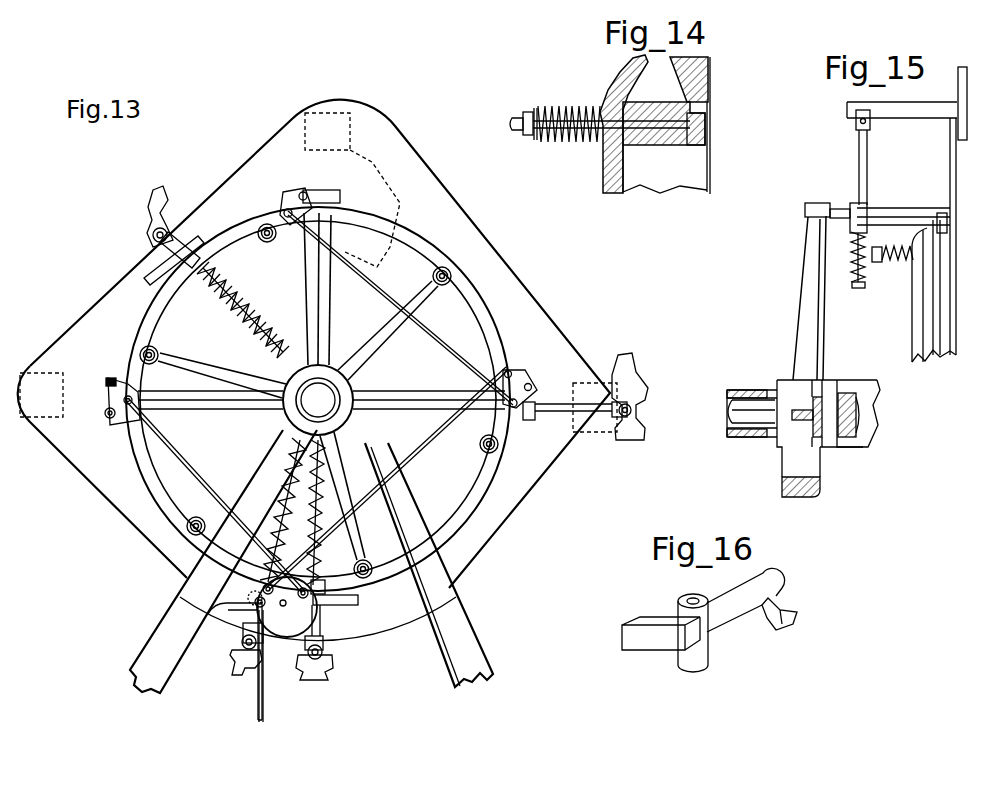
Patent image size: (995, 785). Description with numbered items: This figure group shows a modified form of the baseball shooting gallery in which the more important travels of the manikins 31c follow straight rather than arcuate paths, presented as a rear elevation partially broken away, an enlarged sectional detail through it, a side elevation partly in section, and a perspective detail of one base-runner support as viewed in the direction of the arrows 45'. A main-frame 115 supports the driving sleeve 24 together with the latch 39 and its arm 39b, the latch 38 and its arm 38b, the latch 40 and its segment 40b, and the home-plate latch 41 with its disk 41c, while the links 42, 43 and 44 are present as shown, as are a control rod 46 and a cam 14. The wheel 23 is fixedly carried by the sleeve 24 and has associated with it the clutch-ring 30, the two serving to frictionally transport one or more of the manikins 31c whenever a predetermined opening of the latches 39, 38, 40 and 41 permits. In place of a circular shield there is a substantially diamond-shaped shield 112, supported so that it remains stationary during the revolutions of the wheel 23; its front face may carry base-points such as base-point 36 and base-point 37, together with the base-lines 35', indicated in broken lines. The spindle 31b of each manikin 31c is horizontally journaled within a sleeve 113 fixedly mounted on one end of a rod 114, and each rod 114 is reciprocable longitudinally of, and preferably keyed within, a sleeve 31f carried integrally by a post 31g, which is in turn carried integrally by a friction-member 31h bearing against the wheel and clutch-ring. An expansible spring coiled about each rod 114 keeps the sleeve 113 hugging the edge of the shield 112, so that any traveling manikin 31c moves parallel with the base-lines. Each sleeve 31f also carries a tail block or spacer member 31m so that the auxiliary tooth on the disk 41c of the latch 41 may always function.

In FIG. 13, the diamond-shaped shield 112 is at (436, 224).
In FIG. 15, the diamond-shaped shield 112 is at (950, 172).
In FIG. 13, the main-frame 115 is at (448, 612).
In FIG. 15, the main-frame 115 is at (808, 320).
In FIG. 13, the wheel 23 is at (472, 293).
In FIG. 14, the wheel 23 is at (700, 80).
In FIG. 15, the wheel 23 is at (938, 303).
In FIG. 13, the clutch-ring 30 is at (482, 312).
In FIG. 14, the clutch-ring 30 is at (617, 80).
In FIG. 15, the clutch-ring 30 is at (913, 335).
In FIG. 13, the driving sleeve 24 is at (318, 400).
In FIG. 15, the driving sleeve 24 is at (775, 393).
In FIG. 13, the link 43 is at (430, 332).
In FIG. 13, the rod 114 is at (222, 300).
In FIG. 15, the rod 114 is at (867, 168).
In FIG. 13, the link 44 is at (416, 458).
In FIG. 13, the link 42 is at (200, 475).
In FIG. 13, the latch 38 is at (322, 190).
In FIG. 15, the latch 38 is at (830, 205).
In FIG. 13, the arm 38b is at (293, 190).
In FIG. 13, the latch 39 is at (110, 378).
In FIG. 13, the arm 39b is at (118, 425).
In FIG. 13, the latch 40 is at (536, 402).
In FIG. 13, the segment 40b is at (522, 374).
In FIG. 13, the manikin 31c is at (640, 385).
In FIG. 15, the manikin 31c is at (964, 86).
In FIG. 13, the spindle 31b is at (632, 410).
In FIG. 13, the sleeve 113 is at (636, 416).
In FIG. 15, the sleeve 113 is at (903, 103).
In FIG. 13, the sleeve 31f is at (190, 252).
In FIG. 16, the sleeve 31f is at (683, 594).
In FIG. 13, the tail block or spacer member 31m is at (155, 296).
In FIG. 16, the tail block or spacer member 31m is at (638, 637).
In FIG. 15, the post 31g is at (887, 211).
In FIG. 16, the post 31g is at (718, 606).
In FIG. 15, the friction-member 31h is at (932, 228).
In FIG. 16, the friction-member 31h is at (757, 620).
In FIG. 13, the home-plate latch 41 is at (250, 596).
In FIG. 13, the disk 41c is at (287, 609).
In FIG. 13, the control rod 46 is at (264, 680).
In FIG. 13, the base-point 36 is at (327, 131).
In FIG. 13, the base-point 37 is at (595, 407).
In FIG. 13, the cam 14 is at (400, 203).
In FIG. 13, the base-lines 35' is at (313, 319).
In FIG. 13, the arrows 45' is at (205, 318).
In FIG. 15, the arrows 45' is at (925, 408).